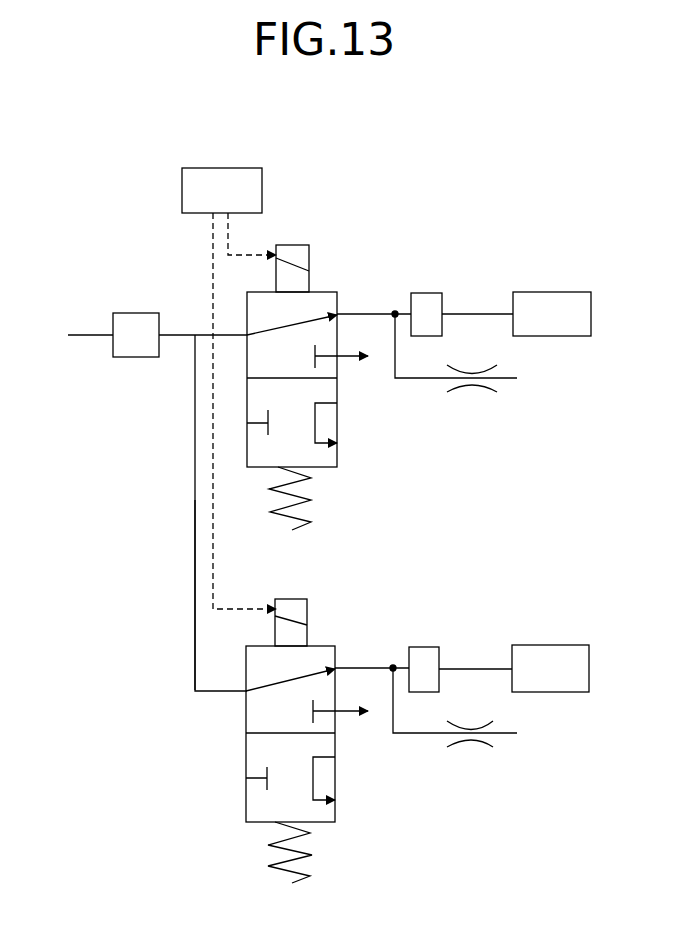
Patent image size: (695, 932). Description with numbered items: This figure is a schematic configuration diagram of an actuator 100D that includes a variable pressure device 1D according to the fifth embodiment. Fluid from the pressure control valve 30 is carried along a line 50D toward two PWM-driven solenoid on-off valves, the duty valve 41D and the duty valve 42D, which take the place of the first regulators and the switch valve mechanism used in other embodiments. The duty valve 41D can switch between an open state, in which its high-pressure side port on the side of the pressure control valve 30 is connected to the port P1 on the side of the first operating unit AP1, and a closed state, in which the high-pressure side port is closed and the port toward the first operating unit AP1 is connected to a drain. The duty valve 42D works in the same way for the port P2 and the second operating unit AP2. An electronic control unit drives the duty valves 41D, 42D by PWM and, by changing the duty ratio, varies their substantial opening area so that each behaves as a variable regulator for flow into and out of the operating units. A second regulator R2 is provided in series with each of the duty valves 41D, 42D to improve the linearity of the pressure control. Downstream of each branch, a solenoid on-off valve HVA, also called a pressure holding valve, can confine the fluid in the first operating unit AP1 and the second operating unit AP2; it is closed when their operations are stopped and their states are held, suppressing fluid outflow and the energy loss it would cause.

The actuator 100D is at (497, 153).
The variable pressure device 1D is at (150, 178).
The pressure control valve 30 is at (138, 313).
The hydraulic line 50D is at (165, 504).
The duty valve 41D is at (322, 290).
The duty valve 42D is at (322, 645).
The first port P1 is at (394, 311).
The second port P2 is at (392, 665).
The solenoid on-off valve HVA is at (428, 292).
The first operating unit AP1 is at (516, 314).
The second operating unit AP2 is at (514, 668).
The second regulator R2 is at (486, 384).